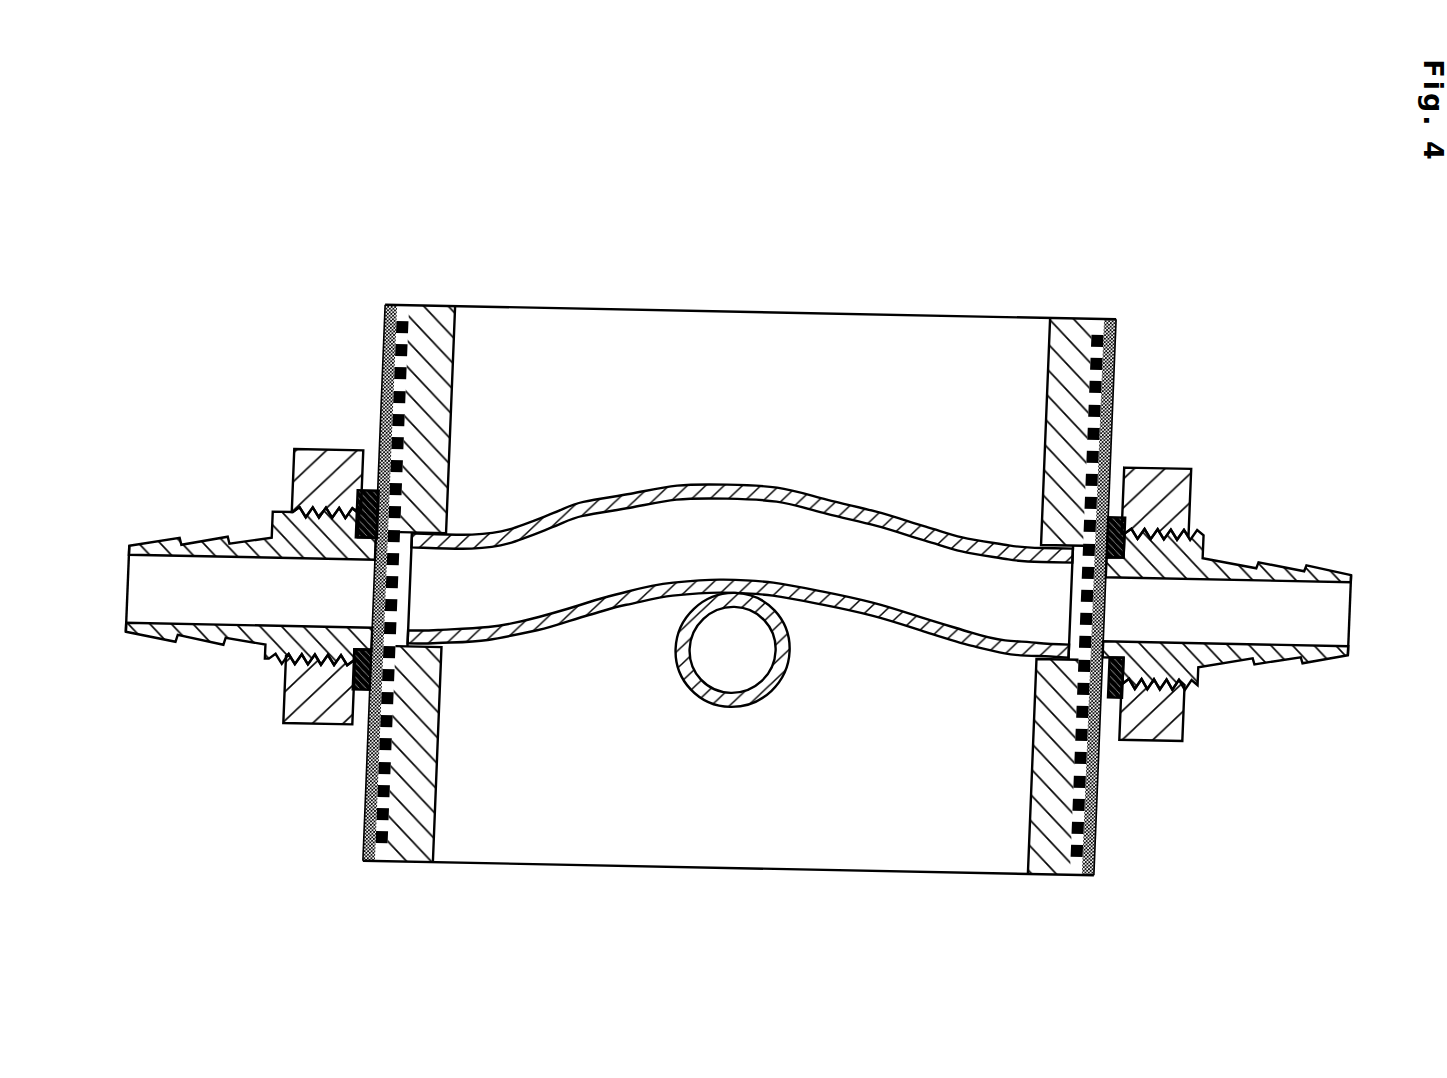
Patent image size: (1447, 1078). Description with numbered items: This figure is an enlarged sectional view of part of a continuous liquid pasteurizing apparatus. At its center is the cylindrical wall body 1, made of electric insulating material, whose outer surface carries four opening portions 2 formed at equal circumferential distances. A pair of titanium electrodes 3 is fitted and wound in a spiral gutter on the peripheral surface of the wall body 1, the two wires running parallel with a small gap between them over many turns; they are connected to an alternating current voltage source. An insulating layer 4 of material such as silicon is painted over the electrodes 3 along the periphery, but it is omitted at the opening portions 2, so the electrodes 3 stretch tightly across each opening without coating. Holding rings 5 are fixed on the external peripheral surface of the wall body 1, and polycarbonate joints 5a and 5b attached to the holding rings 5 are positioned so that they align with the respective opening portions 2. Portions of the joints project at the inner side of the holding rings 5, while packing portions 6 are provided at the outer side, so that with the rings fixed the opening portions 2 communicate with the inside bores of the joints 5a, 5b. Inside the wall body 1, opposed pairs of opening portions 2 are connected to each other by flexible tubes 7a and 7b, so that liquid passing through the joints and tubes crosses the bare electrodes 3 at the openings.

The cylindrical wall body 1 is at (453, 327).
The opening portions 2 is at (420, 637).
The electrodes 3 is at (403, 385).
The insulating layer 4 is at (382, 333).
The holding rings 5 is at (293, 697).
The joint 5a is at (243, 532).
The joint 5b is at (1235, 562).
The packing portions 6 is at (357, 500).
The flexible tube 7a is at (778, 492).
The flexible tube 7b is at (729, 710).